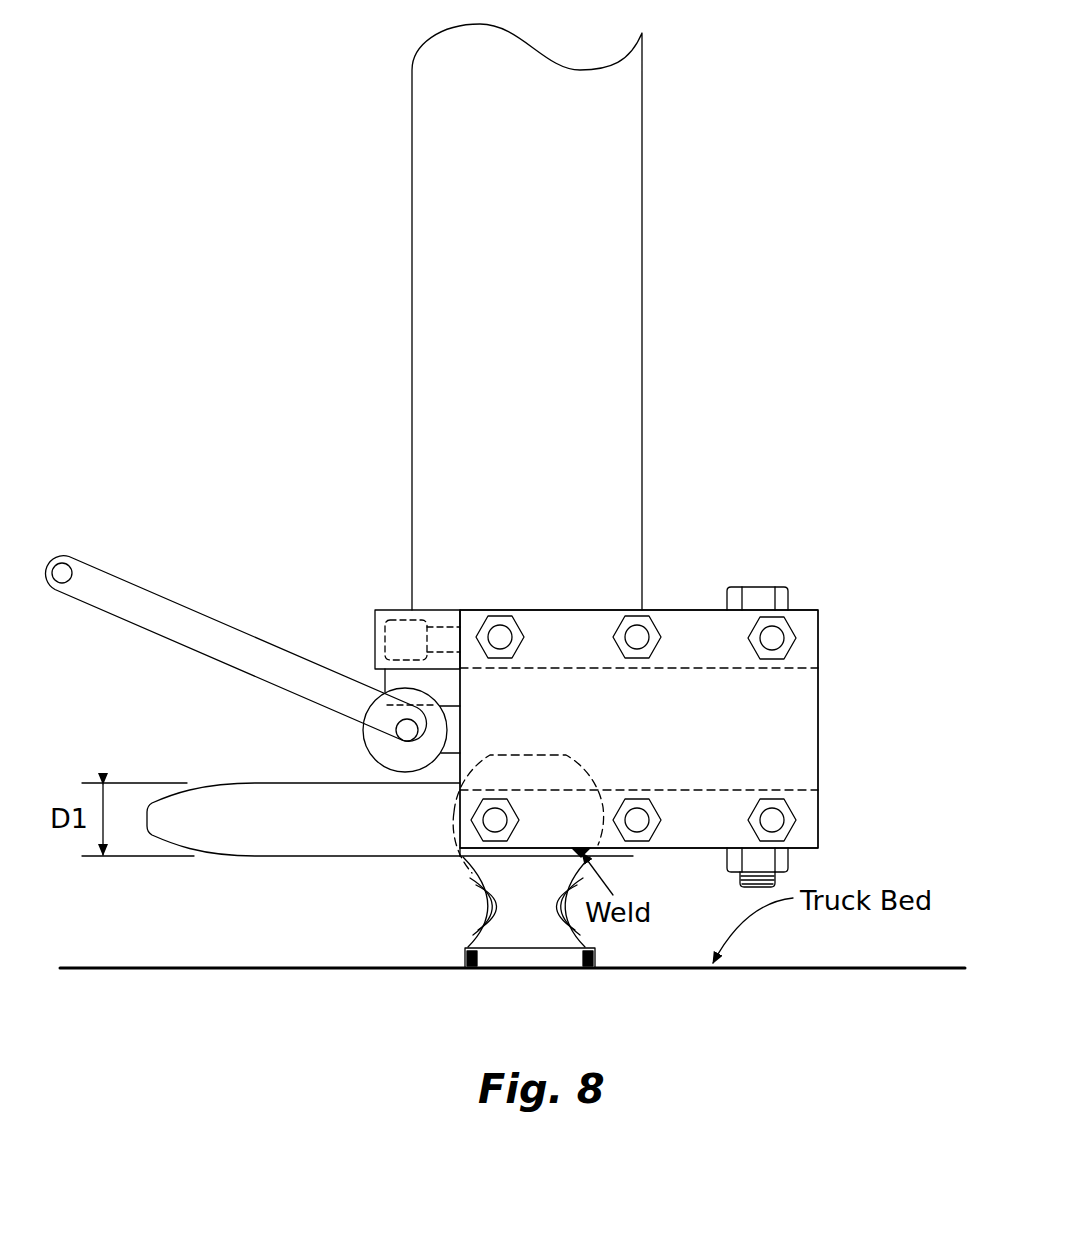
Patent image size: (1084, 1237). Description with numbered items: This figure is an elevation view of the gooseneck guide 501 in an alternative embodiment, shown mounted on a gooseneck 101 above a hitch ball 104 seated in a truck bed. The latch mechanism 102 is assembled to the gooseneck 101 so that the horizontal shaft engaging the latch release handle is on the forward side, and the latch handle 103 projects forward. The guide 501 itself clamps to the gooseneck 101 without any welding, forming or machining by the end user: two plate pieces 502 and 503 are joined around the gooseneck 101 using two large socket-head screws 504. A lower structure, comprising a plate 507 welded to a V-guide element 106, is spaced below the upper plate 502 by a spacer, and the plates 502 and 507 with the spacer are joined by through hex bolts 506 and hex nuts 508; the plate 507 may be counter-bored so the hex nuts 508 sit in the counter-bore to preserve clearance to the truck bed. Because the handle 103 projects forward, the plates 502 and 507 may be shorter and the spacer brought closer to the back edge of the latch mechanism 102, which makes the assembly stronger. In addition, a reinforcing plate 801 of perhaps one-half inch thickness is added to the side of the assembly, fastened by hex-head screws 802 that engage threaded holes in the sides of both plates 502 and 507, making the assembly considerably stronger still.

The gooseneck 101 is at (412, 184).
The latch mechanism 102 is at (383, 697).
The latch handle 103 is at (138, 595).
The hitch ball 104 is at (453, 838).
The V-guide element 106 is at (327, 842).
The gooseneck guide 501 is at (735, 518).
The plate piece 502 is at (660, 608).
The plate piece 503 is at (507, 608).
The socket-head screws 504 is at (418, 610).
The hex bolts 506 is at (785, 587).
The plate 507 is at (807, 825).
The hex nuts 508 is at (790, 865).
The reinforcing plate 801 is at (803, 725).
The hex-head screws 802 is at (773, 660).